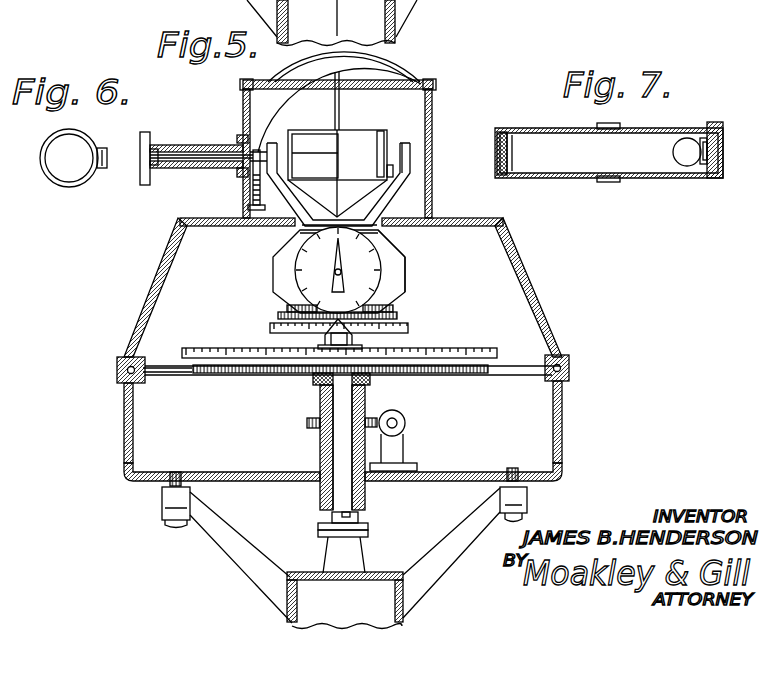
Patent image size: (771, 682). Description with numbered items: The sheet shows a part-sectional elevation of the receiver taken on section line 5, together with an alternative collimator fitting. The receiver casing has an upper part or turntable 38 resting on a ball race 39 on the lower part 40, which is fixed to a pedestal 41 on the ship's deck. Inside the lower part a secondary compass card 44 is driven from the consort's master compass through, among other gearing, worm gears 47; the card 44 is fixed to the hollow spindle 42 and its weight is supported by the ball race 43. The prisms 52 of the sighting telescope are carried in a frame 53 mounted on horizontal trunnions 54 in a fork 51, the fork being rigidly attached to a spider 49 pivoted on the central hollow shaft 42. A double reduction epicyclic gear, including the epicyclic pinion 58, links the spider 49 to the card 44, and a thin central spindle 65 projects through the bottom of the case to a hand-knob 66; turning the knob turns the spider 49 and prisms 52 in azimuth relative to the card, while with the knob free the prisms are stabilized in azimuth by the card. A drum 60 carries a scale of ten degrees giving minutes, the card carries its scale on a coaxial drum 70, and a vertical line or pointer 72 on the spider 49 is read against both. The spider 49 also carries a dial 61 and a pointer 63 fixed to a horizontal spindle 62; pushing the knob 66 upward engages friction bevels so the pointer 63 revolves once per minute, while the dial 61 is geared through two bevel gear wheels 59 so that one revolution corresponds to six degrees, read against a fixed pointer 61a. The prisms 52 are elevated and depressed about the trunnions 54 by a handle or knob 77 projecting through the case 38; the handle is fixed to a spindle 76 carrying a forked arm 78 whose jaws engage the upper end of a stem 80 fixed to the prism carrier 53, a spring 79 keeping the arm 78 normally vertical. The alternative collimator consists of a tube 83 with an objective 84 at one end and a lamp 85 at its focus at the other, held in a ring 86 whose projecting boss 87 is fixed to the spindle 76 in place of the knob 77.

In FIG. 5, the section line 5 is at (365, 22).
In FIG. 5, the upper part or turntable 38 is at (142, 320).
In FIG. 5, the ball race 39 is at (128, 371).
In FIG. 5, the lower part 40 is at (126, 445).
In FIG. 5, the pedestal 41 is at (290, 600).
In FIG. 5, the hollow spindle 42 is at (340, 488).
In FIG. 5, the ball race 43 is at (560, 393).
In FIG. 5, the secondary compass card 44 is at (175, 377).
In FIG. 5, the worm gears 47 is at (310, 422).
In FIG. 5, the spider 49 is at (296, 280).
In FIG. 5, the fork 51 is at (383, 208).
In FIG. 5, the prisms 52 is at (352, 145).
In FIG. 5, the frame 53 is at (381, 137).
In FIG. 5, the horizontal trunnions 54 is at (404, 147).
In FIG. 5, the epicyclic pinion 58 is at (400, 306).
In FIG. 5, the bevel gear wheels 59 is at (400, 284).
In FIG. 5, the drum 60 is at (400, 315).
In FIG. 5, the dial 61 is at (405, 262).
In FIG. 5, the fixed pointer 61a is at (272, 328).
In FIG. 5, the horizontal spindle 62 is at (273, 262).
In FIG. 5, the pointer 63 is at (385, 241).
In FIG. 5, the thin central spindle 65 is at (528, 508).
In FIG. 5, the hand-knob 66 is at (370, 530).
In FIG. 5, the drum 70 is at (498, 352).
In FIG. 5, the vertical line or pointer 72 is at (412, 332).
In FIG. 5, the spindle 76 is at (188, 152).
In FIG. 5, the handle or knob 77 is at (143, 133).
In FIG. 5, the forked arm 78 is at (246, 101).
In FIG. 5, the spring 79 is at (252, 193).
In FIG. 5, the stem 80 is at (338, 108).
In FIG. 7, the tube 83 is at (568, 180).
In FIG. 7, the objective 84 is at (507, 162).
In FIG. 7, the lamp 85 is at (687, 158).
In FIG. 6, the ring 86 is at (73, 181).
In FIG. 7, the ring 86 is at (607, 180).
In FIG. 6, the projecting boss 87 is at (101, 168).